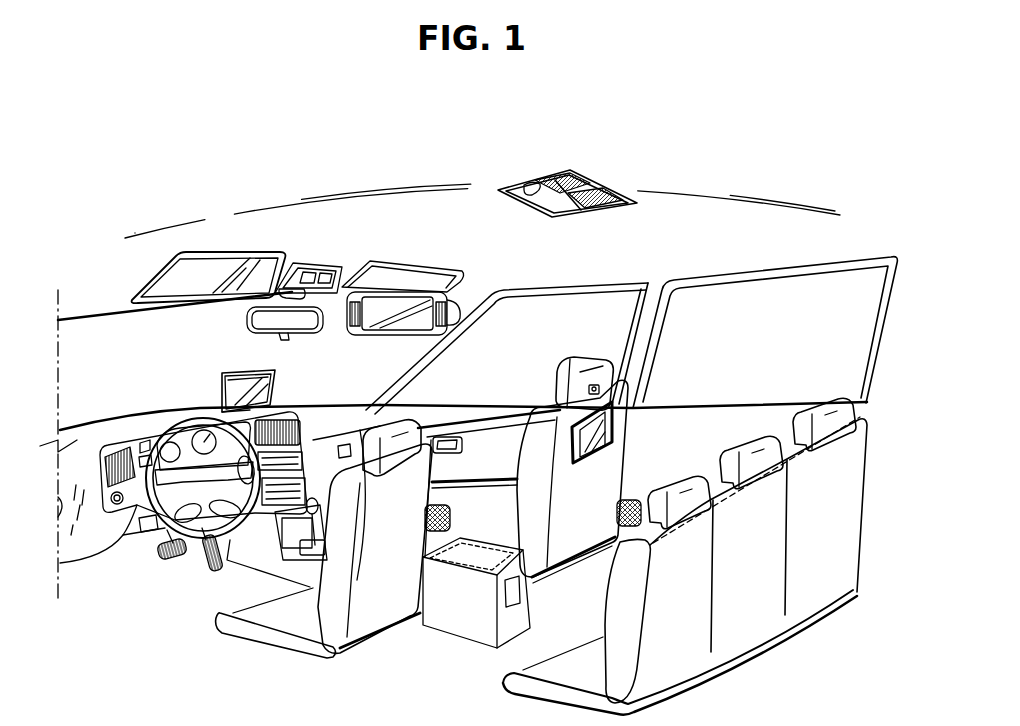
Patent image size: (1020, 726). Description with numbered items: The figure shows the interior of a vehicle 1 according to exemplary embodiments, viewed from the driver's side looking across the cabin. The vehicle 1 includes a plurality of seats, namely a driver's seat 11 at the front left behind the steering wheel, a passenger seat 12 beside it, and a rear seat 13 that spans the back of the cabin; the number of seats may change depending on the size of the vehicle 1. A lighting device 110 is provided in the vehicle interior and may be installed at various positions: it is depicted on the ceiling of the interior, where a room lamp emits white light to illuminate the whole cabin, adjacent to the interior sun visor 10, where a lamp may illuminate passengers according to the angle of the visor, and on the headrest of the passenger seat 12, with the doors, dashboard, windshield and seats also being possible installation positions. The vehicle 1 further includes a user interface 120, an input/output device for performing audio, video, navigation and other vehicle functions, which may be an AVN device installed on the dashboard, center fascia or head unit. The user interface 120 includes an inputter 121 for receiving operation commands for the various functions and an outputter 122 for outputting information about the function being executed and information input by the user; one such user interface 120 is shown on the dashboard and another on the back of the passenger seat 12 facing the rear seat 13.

The vehicle 1 is at (434, 167).
The interior sun visor 10 is at (209, 270).
The driver's seat 11 is at (373, 421).
The passenger seat 12 is at (580, 371).
The rear seat 13 is at (834, 404).
The lighting device 110 is at (367, 305).
The user interface 120 is at (253, 343).
The inputter 121 is at (220, 408).
The outputter 122 is at (240, 386).